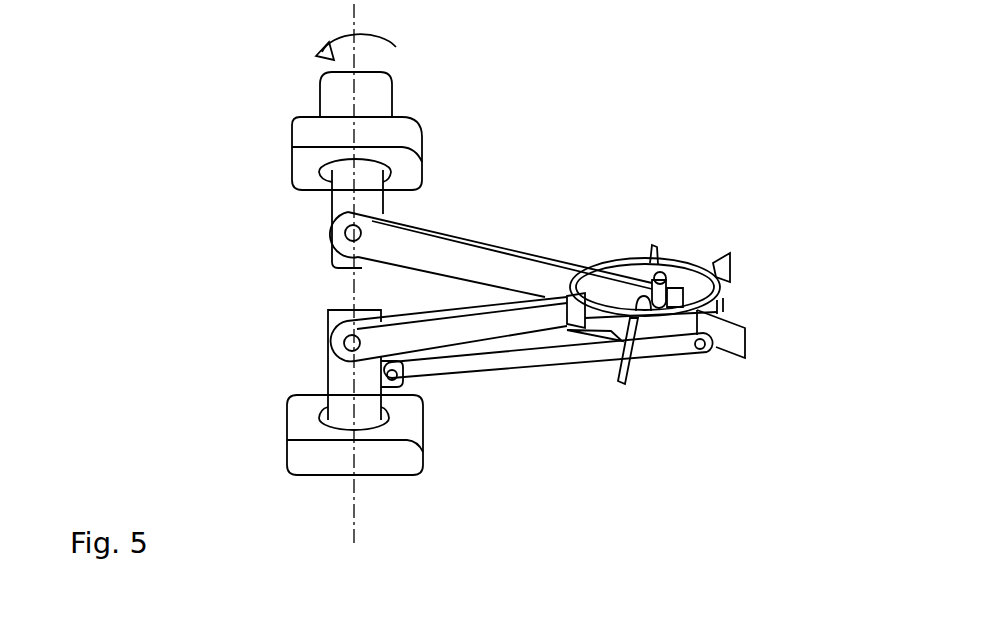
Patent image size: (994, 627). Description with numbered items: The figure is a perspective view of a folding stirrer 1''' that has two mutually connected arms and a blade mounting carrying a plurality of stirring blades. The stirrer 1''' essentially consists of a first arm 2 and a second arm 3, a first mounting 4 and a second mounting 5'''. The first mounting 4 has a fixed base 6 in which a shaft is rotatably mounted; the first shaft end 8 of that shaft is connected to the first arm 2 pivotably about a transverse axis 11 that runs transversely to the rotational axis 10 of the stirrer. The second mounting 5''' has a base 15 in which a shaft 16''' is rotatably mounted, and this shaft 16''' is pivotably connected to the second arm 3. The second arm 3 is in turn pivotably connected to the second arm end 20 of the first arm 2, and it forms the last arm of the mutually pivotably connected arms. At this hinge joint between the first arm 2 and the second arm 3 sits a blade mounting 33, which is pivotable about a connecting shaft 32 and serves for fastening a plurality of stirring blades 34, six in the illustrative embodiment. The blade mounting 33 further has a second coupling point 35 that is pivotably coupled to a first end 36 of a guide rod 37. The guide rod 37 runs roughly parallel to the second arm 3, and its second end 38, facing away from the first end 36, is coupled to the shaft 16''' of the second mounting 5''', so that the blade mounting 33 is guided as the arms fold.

The stirrer 1''' is at (463, 314).
The first arm 2 is at (422, 245).
The second arm 3 is at (453, 325).
The first mounting 4 is at (268, 106).
The second mounting 5''' is at (241, 402).
The fixed base 6 is at (390, 130).
The first shaft end 8 is at (338, 252).
The rotational axis 10 is at (352, 521).
The transverse axis 11 is at (348, 232).
The base 15 is at (300, 460).
The shaft 16''' is at (220, 365).
The second arm end 20 is at (638, 290).
The connecting shaft 32 is at (664, 274).
The blade mounting 33 is at (735, 296).
The stirring blades 34 is at (652, 258).
The second coupling point 35 is at (708, 354).
The first end 36 is at (702, 352).
The guide rod 37 is at (505, 368).
The second end 38 is at (403, 380).